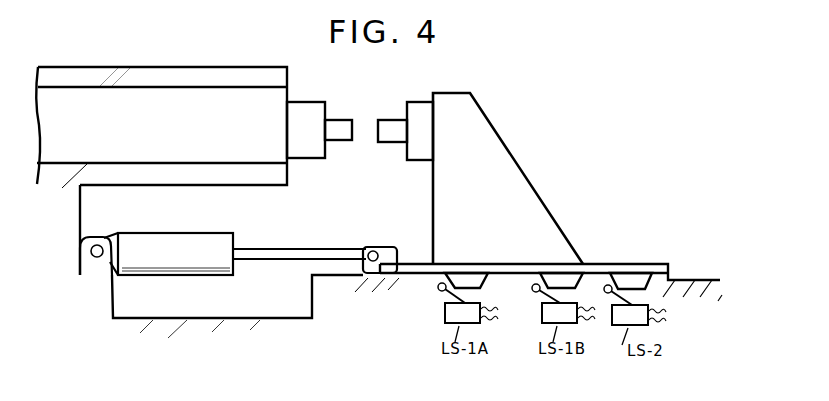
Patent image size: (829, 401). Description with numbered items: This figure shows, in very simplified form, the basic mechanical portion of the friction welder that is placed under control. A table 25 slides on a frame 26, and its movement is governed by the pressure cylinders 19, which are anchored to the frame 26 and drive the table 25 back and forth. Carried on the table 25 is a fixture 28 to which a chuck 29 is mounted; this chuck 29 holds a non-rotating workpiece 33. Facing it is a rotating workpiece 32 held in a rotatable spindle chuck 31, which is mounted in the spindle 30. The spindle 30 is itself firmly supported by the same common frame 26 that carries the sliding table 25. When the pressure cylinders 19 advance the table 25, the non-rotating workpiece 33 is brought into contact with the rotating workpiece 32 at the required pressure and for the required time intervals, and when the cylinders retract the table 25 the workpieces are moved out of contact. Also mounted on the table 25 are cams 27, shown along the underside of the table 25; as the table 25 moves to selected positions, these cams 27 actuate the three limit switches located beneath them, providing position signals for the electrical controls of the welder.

The pressure cylinders 19 is at (168, 241).
The table 25 is at (666, 270).
The frame 26 is at (265, 326).
The cams 27 is at (555, 272).
The fixture 28 is at (498, 151).
The chuck 29 is at (418, 153).
The spindle 30 is at (148, 93).
The rotatable spindle chuck 31 is at (300, 106).
The rotating workpiece 32 is at (337, 141).
The non-rotating workpiece 33 is at (394, 125).